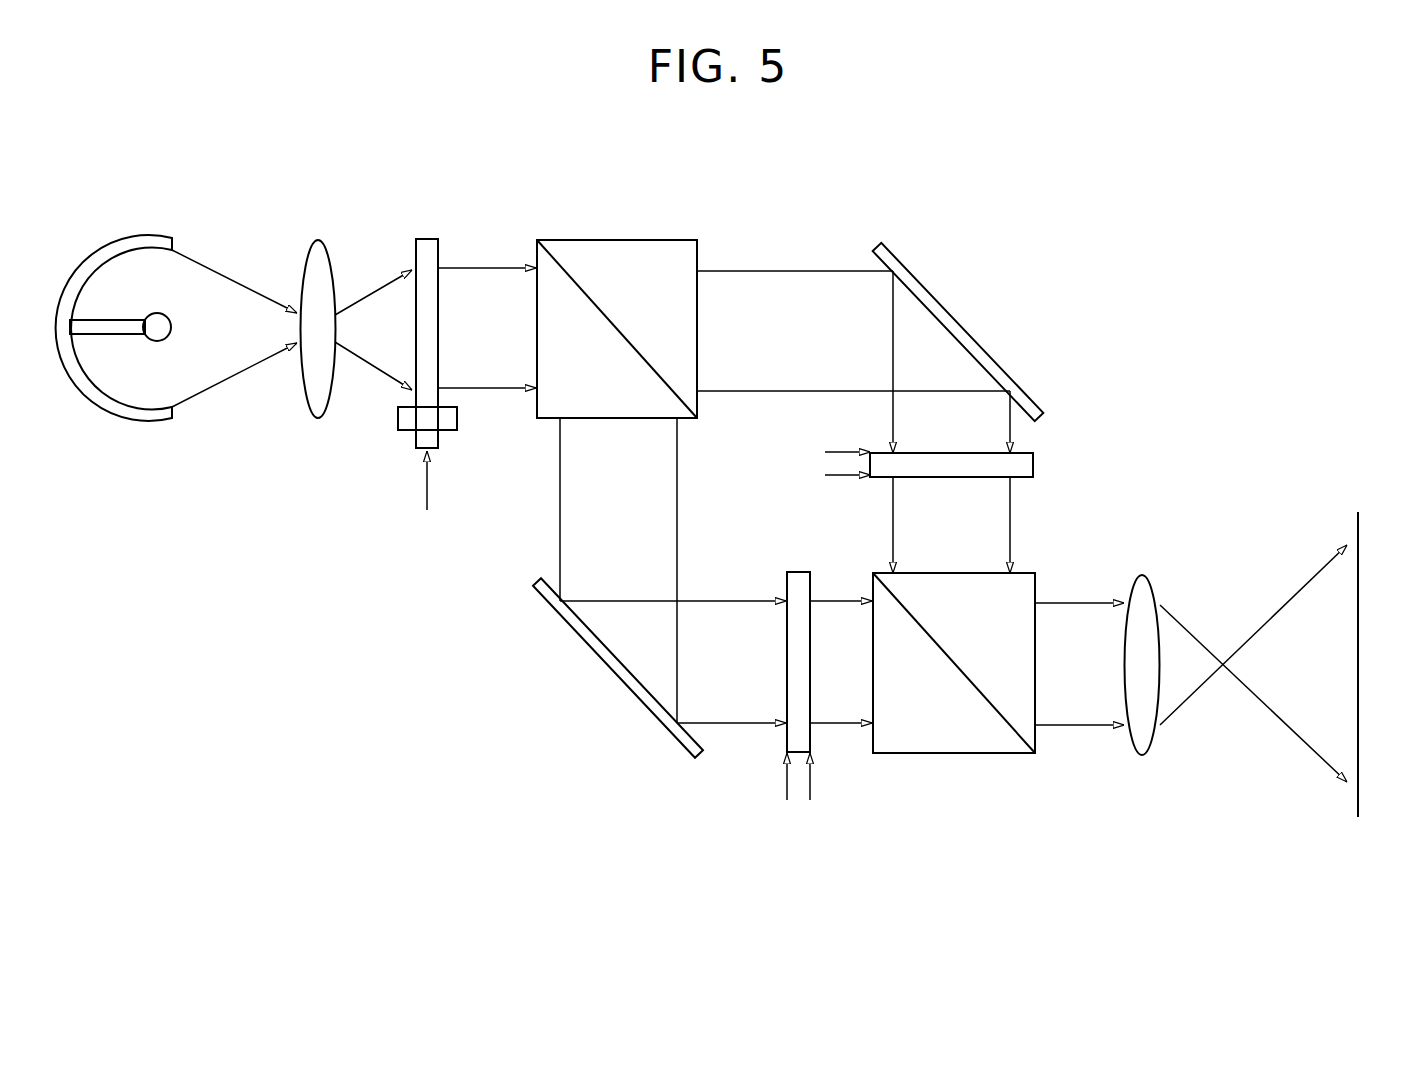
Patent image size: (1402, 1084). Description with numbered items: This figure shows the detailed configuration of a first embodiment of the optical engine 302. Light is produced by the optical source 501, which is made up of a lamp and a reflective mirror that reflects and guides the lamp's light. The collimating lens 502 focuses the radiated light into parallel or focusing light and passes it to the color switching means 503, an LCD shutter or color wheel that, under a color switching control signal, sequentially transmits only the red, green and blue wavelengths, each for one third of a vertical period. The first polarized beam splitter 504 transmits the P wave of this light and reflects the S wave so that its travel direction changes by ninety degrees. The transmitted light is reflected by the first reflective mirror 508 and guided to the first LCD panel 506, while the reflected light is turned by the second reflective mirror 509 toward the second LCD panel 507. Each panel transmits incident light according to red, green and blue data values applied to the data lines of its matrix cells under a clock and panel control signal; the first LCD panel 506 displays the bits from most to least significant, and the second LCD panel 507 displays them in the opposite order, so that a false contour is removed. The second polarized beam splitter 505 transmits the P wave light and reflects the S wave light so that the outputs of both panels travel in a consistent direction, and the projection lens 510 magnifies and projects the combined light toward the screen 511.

The optical engine 302 is at (1197, 193).
The optical source 501 is at (131, 243).
The collimating lens 502 is at (320, 240).
The color switching means 503 is at (433, 239).
The first polarized beam splitter 504 is at (617, 240).
The second polarized beam splitter 505 is at (967, 753).
The first LCD panel 506 is at (1033, 465).
The second LCD panel 507 is at (797, 572).
The first reflective mirror 508 is at (965, 325).
The second reflective mirror 509 is at (613, 673).
The projection lens 510 is at (1141, 575).
The screen 511 is at (1358, 646).